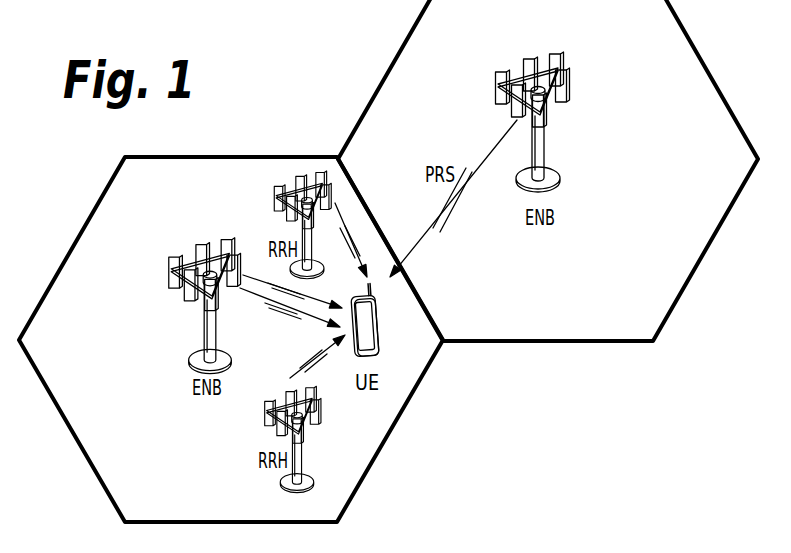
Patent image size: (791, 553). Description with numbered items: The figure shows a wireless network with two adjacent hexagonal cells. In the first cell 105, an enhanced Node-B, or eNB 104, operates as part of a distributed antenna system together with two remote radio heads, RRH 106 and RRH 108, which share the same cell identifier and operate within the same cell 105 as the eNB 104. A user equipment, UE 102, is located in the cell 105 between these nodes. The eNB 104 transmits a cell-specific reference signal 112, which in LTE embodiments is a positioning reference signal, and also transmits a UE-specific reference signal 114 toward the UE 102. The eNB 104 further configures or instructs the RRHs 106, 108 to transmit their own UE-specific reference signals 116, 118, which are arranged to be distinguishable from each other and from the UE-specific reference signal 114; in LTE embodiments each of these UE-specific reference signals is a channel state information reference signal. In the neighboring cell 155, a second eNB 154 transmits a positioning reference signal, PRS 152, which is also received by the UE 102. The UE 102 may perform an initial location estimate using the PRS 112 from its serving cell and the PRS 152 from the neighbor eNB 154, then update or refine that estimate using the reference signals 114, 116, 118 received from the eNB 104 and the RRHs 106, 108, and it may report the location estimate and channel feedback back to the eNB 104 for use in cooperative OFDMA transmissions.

The user equipment (UE) 102 is at (368, 322).
The enhanced Node-B (eNB) 104 is at (167, 266).
The cell 105 is at (385, 450).
The remote radio head (RRH) 106 is at (265, 412).
The remote radio head (RRH) 108 is at (275, 191).
The cell-specific reference signal 112 is at (262, 272).
The UE-specific reference signal 114 is at (295, 312).
The UE-specific reference signal 116 is at (300, 367).
The UE-specific reference signal 118 is at (352, 232).
The positioning reference signal (PRS) 152 is at (458, 203).
The enhanced Node-B (eNB) 154 is at (500, 84).
The cell 155 is at (542, 343).